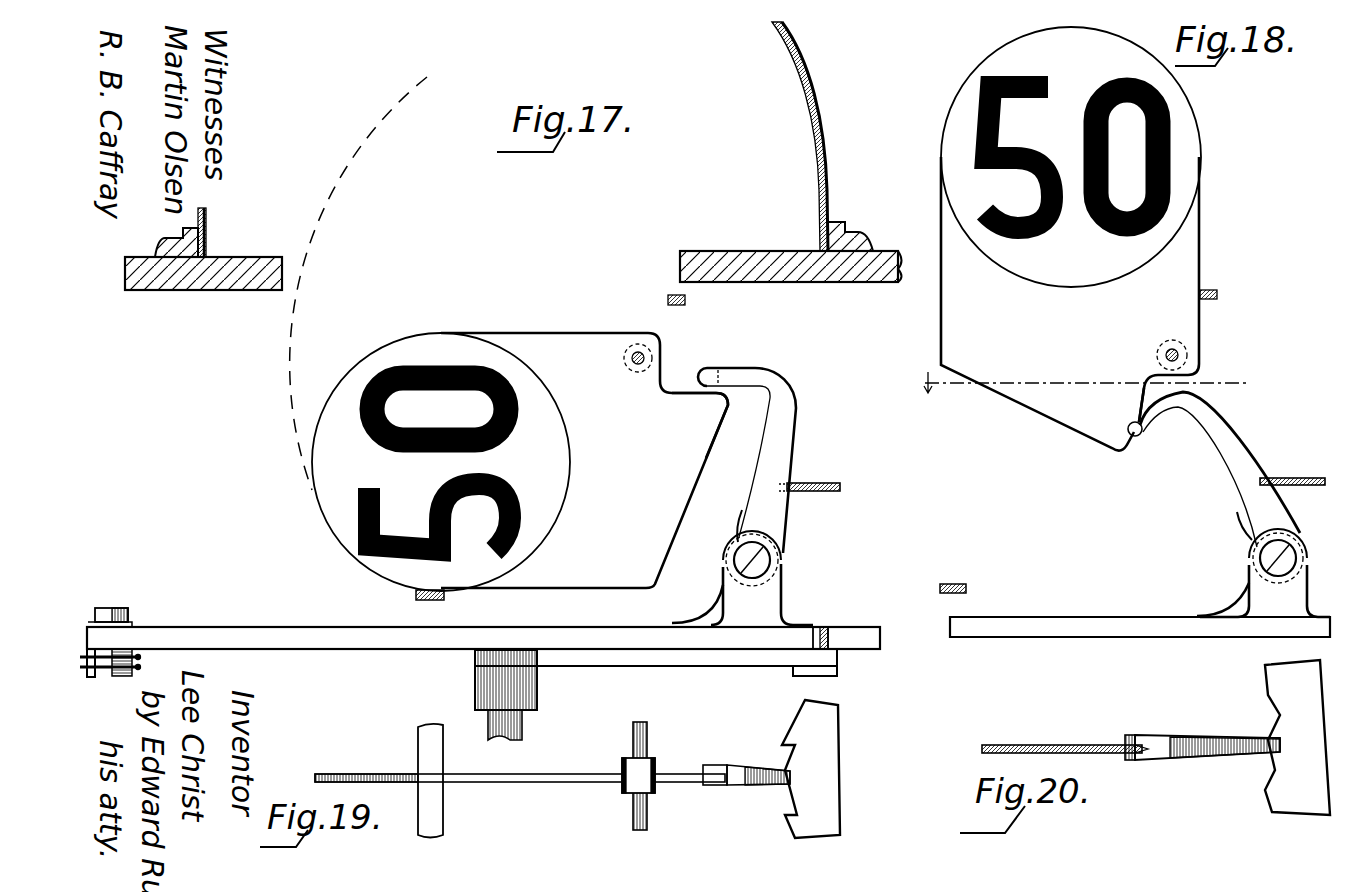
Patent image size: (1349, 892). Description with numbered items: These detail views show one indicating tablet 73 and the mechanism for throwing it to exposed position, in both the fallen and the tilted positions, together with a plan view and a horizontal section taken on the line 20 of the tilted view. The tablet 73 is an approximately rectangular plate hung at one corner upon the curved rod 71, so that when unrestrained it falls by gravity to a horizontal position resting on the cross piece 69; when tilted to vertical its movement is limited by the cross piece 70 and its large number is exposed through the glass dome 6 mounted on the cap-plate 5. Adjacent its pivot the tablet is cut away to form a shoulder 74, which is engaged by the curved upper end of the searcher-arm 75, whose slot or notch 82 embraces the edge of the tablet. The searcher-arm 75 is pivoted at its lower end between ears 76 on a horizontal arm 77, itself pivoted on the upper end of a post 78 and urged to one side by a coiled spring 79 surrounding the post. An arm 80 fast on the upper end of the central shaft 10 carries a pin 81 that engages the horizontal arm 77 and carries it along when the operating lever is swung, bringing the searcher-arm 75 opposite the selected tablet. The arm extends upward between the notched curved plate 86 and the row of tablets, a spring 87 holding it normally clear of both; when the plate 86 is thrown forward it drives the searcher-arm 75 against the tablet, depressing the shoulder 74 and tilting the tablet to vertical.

In FIG. 17, the cap-plate 5 is at (882, 252).
In FIG. 17, the glass dome 6 is at (816, 108).
In FIG. 17, the central shaft 10 is at (522, 724).
In FIG. 18, the section line 20— 20 is at (1084, 383).
In FIG. 17, the cross piece 69 is at (416, 597).
In FIG. 18, the cross piece 69 is at (966, 588).
In FIG. 19, the cross piece 69 is at (418, 745).
In FIG. 17, the cross piece 70 is at (685, 300).
In FIG. 18, the cross piece 70 is at (1218, 295).
In FIG. 17, the curved rod 71 is at (644, 358).
In FIG. 18, the curved rod 71 is at (1178, 355).
In FIG. 19, the curved rod 71 is at (647, 732).
In FIG. 17, the indicating tablet 73 is at (520, 462).
In FIG. 18, the indicating tablet 73 is at (1071, 239).
In FIG. 19, the indicating tablet 73 is at (506, 782).
In FIG. 20, the indicating tablet 73 is at (1050, 745).
In FIG. 17, the shoulder 74 is at (712, 393).
In FIG. 18, the shoulder 74 is at (1142, 436).
In FIG. 17, the searcher-arm 75 is at (786, 433).
In FIG. 18, the searcher-arm 75 is at (1242, 440).
In FIG. 19, the searcher-arm 75 is at (740, 765).
In FIG. 20, the searcher-arm 75 is at (1196, 738).
In FIG. 17, the ears 76 is at (774, 596).
In FIG. 18, the ears 76 is at (1278, 570).
In FIG. 17, the horizontal arm 77 is at (597, 630).
In FIG. 18, the horizontal arm 77 is at (1130, 624).
In FIG. 17, the post 78 is at (128, 612).
In FIG. 17, the coiled spring 79 is at (137, 662).
In FIG. 17, the arm 80 is at (697, 662).
In FIG. 17, the pin 81 is at (825, 634).
In FIG. 17, the slot or notch 82 is at (714, 375).
In FIG. 18, the slot or notch 82 is at (1130, 424).
In FIG. 19, the slot or notch 82 is at (724, 785).
In FIG. 20, the slot or notch 82 is at (1143, 752).
In FIG. 17, the curved plate 86 is at (820, 483).
In FIG. 18, the curved plate 86 is at (1300, 471).
In FIG. 19, the curved plate 86 is at (811, 769).
In FIG. 20, the curved plate 86 is at (1297, 737).
In FIG. 17, the spring 87 is at (705, 612).
In FIG. 18, the spring 87 is at (1236, 602).